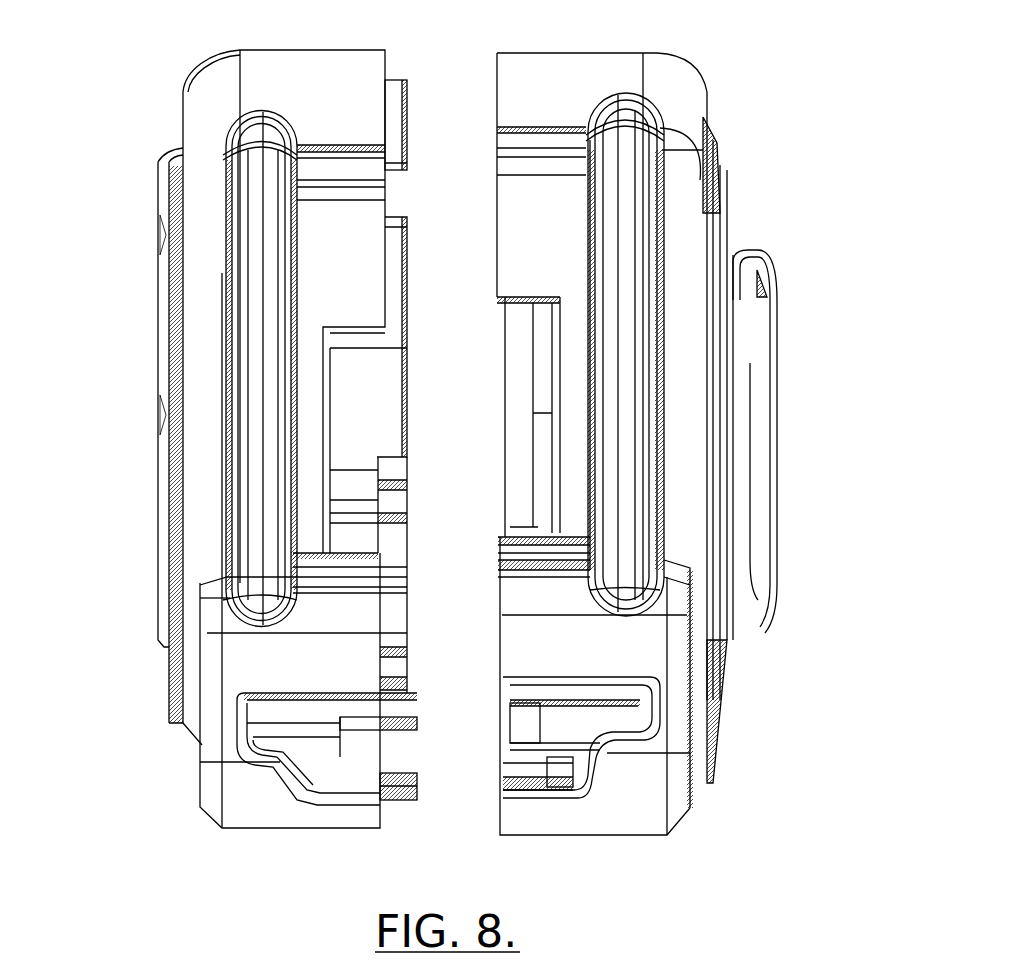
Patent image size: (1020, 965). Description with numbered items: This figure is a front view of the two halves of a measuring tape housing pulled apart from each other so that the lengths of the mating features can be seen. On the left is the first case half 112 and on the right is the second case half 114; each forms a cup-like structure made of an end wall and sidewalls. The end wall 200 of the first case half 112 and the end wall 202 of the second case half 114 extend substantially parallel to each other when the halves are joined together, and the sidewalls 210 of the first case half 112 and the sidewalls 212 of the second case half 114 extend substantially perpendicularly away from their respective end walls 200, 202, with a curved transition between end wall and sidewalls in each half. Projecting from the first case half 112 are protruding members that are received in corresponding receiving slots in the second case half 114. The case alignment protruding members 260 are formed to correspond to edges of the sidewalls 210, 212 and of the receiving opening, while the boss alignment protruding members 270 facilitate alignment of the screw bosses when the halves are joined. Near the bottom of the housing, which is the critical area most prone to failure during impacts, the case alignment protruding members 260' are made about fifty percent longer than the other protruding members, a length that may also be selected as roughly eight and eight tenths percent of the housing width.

The first case half 112 is at (150, 195).
The second case half 114 is at (724, 136).
The end wall 200 is at (185, 528).
The end wall 202 is at (712, 632).
The sidewalls 210 is at (325, 73).
The sidewalls 212 is at (548, 72).
The case alignment protruding members 260 is at (435, 363).
The case alignment protruding members 260' is at (372, 797).
The boss alignment protruding members 270 is at (393, 643).